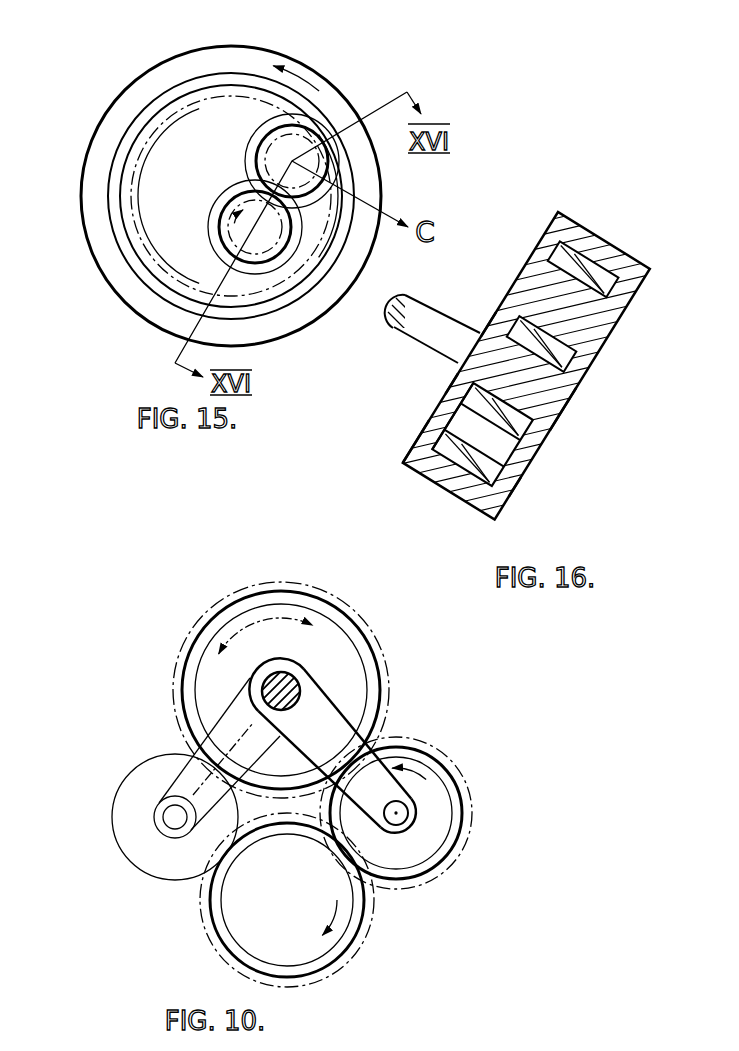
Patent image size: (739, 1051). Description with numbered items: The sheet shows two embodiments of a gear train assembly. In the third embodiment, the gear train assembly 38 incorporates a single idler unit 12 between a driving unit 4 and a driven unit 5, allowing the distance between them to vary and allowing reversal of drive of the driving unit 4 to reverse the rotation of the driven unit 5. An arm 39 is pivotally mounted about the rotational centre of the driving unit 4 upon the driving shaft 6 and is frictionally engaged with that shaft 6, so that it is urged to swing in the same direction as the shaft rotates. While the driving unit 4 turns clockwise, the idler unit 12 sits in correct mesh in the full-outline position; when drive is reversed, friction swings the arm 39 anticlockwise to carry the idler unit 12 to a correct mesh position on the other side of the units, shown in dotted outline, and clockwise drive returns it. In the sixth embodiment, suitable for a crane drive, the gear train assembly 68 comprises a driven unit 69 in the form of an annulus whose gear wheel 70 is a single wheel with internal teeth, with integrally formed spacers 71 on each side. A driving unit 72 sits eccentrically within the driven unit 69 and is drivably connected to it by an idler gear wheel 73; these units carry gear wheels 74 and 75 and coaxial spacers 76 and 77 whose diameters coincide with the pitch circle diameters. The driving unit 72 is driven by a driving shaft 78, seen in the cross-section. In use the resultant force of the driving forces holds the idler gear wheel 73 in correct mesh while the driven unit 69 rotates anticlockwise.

In FIG. 10, the driving unit 4 is at (257, 640).
In FIG. 10, the driven unit 5 is at (313, 947).
In FIG. 10, the driving shaft 6 is at (272, 691).
In FIG. 10, the idler unit 12 is at (438, 797).
In FIG. 10, the gear train assembly 38 is at (368, 629).
In FIG. 10, the arm 39 is at (323, 727).
In FIG. 15, the gear train assembly 68 is at (300, 66).
In FIG. 16, the gear train assembly 68 is at (614, 242).
In FIG. 15, the driven unit 69 is at (104, 126).
In FIG. 16, the driven unit 69 is at (412, 465).
In FIG. 15, the gear wheel 70 is at (106, 218).
In FIG. 16, the gear wheel 70 is at (470, 463).
In FIG. 15, the spacers 71 is at (120, 178).
In FIG. 16, the spacers 71 is at (420, 437).
In FIG. 15, the driving unit 72 is at (227, 212).
In FIG. 16, the driving unit 72 is at (567, 407).
In FIG. 15, the idler gear wheel 73 is at (266, 141).
In FIG. 16, the idler gear wheel 73 is at (608, 340).
In FIG. 15, the gear wheel 74 is at (212, 222).
In FIG. 16, the gear wheel 74 is at (480, 400).
In FIG. 15, the gear wheel 75 is at (264, 120).
In FIG. 16, the gear wheel 75 is at (563, 258).
In FIG. 15, the spacers 76 is at (224, 246).
In FIG. 16, the spacers 76 is at (458, 391).
In FIG. 15, the spacers 77 is at (284, 125).
In FIG. 16, the spacers 77 is at (487, 323).
In FIG. 16, the driving shaft 78 is at (417, 325).